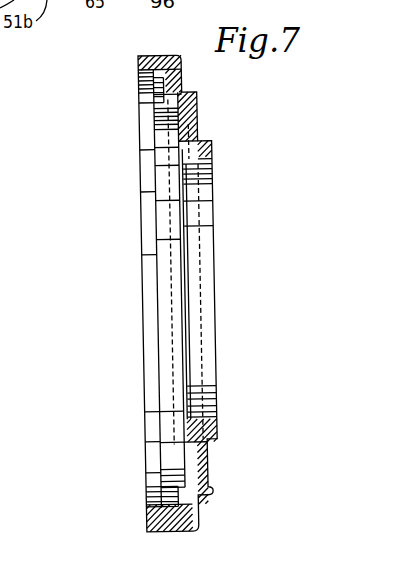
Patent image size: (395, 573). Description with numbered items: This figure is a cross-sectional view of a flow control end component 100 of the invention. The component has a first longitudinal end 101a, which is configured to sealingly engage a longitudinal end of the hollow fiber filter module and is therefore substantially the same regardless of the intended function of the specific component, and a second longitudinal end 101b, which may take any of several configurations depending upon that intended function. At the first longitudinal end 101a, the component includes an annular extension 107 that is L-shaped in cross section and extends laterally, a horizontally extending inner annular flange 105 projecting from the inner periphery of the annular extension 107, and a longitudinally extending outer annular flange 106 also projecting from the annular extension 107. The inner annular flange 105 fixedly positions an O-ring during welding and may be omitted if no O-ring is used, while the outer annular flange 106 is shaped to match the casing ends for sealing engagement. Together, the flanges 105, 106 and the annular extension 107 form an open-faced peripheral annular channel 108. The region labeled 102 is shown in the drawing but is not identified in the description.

The flow control end component 100 is at (128, 192).
The first longitudinal end 101a is at (138, 126).
The second longitudinal end 101b is at (214, 200).
The central bore 102 is at (161, 233).
The inner annular flange 105 is at (166, 482).
The outer annular flange 106 is at (158, 509).
The annular extension 107 is at (199, 512).
The open-faced peripheral annular channel 108 is at (138, 96).